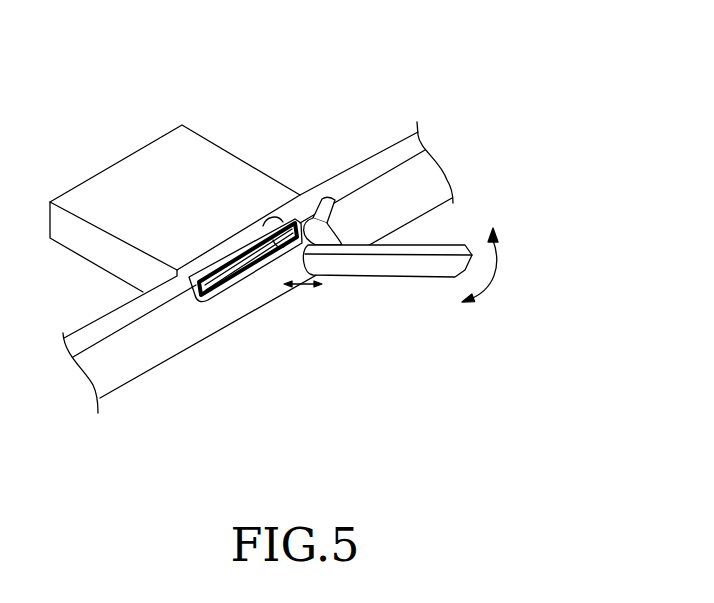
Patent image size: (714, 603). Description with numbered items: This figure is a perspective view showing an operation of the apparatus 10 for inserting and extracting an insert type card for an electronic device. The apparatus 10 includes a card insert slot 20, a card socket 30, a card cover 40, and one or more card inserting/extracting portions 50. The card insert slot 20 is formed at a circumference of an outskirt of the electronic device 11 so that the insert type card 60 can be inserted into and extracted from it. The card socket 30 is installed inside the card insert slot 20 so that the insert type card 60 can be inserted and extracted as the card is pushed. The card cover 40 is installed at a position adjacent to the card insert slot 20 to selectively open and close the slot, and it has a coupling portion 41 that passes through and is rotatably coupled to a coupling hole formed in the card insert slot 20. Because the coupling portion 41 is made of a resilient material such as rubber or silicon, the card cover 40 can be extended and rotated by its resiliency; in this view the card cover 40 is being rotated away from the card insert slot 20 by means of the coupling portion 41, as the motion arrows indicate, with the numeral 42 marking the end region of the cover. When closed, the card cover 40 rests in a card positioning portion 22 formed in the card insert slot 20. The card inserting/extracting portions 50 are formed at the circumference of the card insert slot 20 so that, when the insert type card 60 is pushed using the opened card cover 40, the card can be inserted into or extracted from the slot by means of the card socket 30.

The apparatus for inserting/extracting an insert type card 10 is at (466, 96).
The electronic device 11 is at (137, 355).
The card insert slot 20 is at (290, 220).
The card positioning portion 22 is at (330, 207).
The card socket 30 is at (118, 172).
The card cover 40 is at (448, 263).
The coupling portion 41 is at (324, 198).
The handle end portion 42 is at (318, 260).
The card inserting/extracting portion 50 is at (263, 223).
The insert type card 60 is at (205, 276).